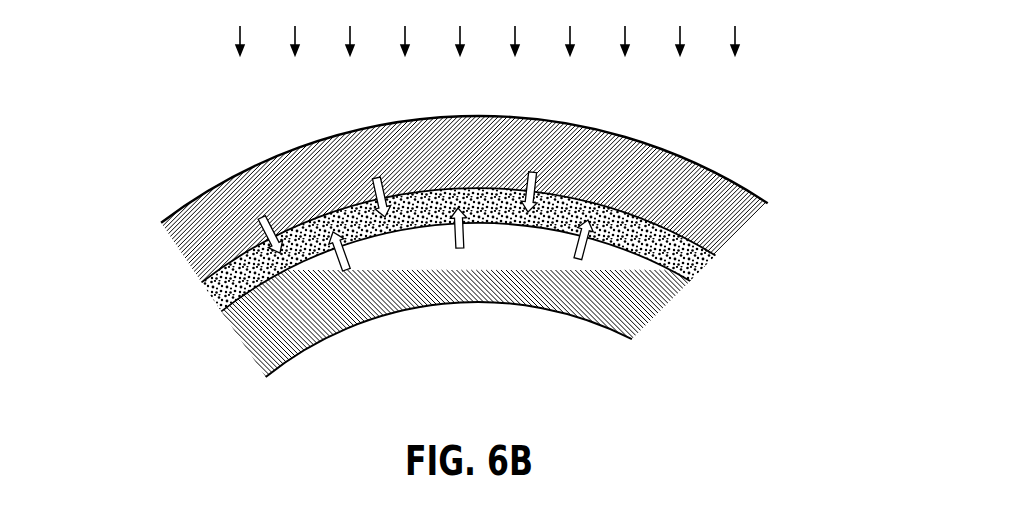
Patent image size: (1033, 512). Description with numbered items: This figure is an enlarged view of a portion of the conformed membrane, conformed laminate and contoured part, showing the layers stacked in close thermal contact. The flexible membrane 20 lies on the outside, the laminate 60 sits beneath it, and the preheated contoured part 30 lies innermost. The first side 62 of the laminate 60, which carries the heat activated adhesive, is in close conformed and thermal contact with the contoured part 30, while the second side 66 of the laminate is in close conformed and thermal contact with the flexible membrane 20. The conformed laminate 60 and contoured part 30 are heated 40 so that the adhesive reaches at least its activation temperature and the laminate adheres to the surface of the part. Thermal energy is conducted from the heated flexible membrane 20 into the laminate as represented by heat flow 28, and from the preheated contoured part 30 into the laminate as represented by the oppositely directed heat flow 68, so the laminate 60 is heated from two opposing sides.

The flexible membrane 20 is at (190, 198).
The heat flow 28 is at (263, 217).
The contoured part 30 is at (322, 338).
The heating 40 is at (235, 35).
The laminate 60 is at (206, 298).
The first side 62 is at (227, 310).
The second side 66 is at (200, 277).
The heat flow 68 is at (347, 273).